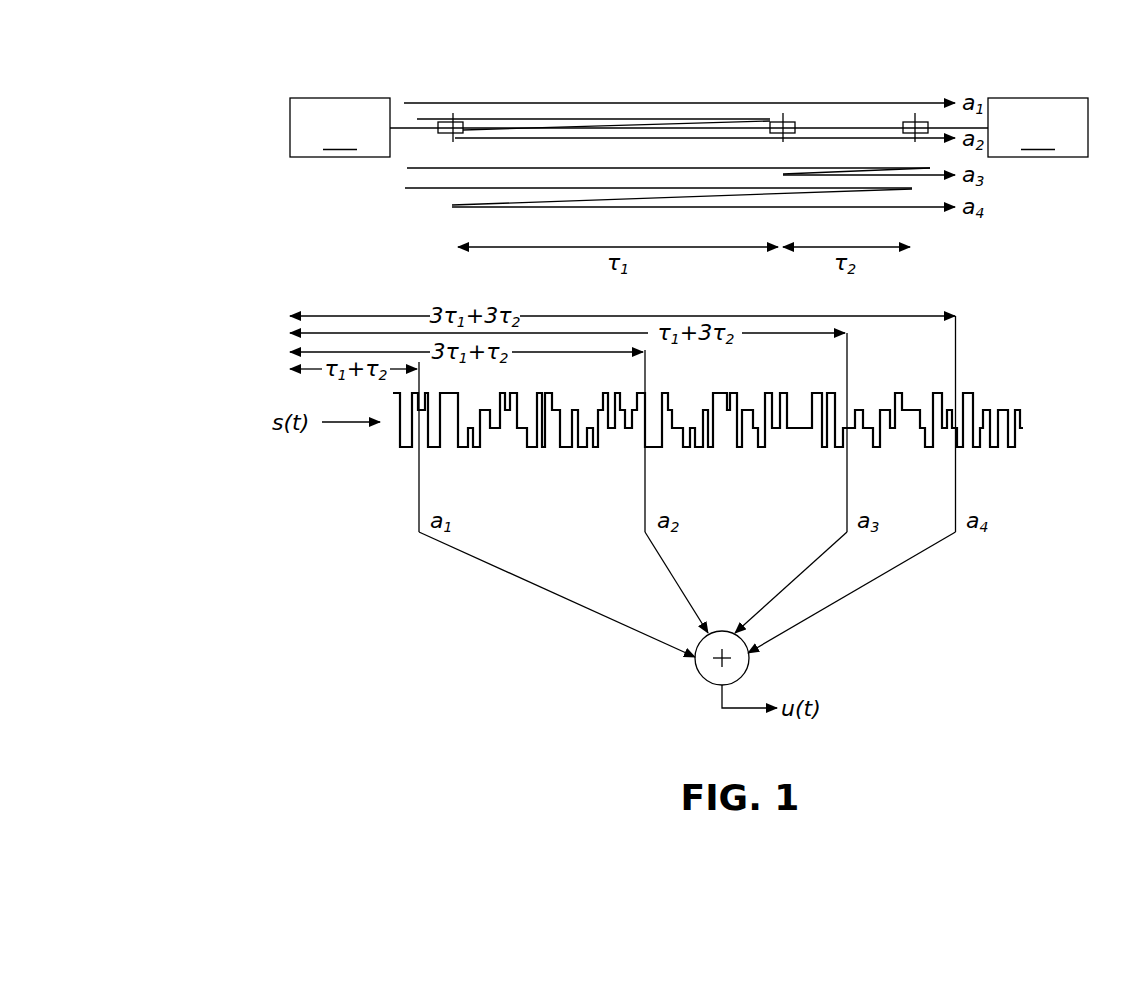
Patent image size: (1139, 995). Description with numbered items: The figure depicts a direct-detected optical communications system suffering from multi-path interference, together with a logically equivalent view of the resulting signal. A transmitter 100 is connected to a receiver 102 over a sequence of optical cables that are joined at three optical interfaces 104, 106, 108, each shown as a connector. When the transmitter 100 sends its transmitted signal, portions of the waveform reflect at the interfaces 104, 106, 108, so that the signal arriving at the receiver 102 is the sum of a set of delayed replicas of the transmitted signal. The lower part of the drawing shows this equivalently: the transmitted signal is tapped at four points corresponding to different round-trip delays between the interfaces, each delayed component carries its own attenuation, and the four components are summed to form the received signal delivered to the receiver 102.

The transmitter 100 is at (340, 127).
The receiver 102 is at (1038, 127).
The optical interface 104 is at (459, 66).
The optical interface 106 is at (790, 66).
The optical interface 108 is at (922, 66).